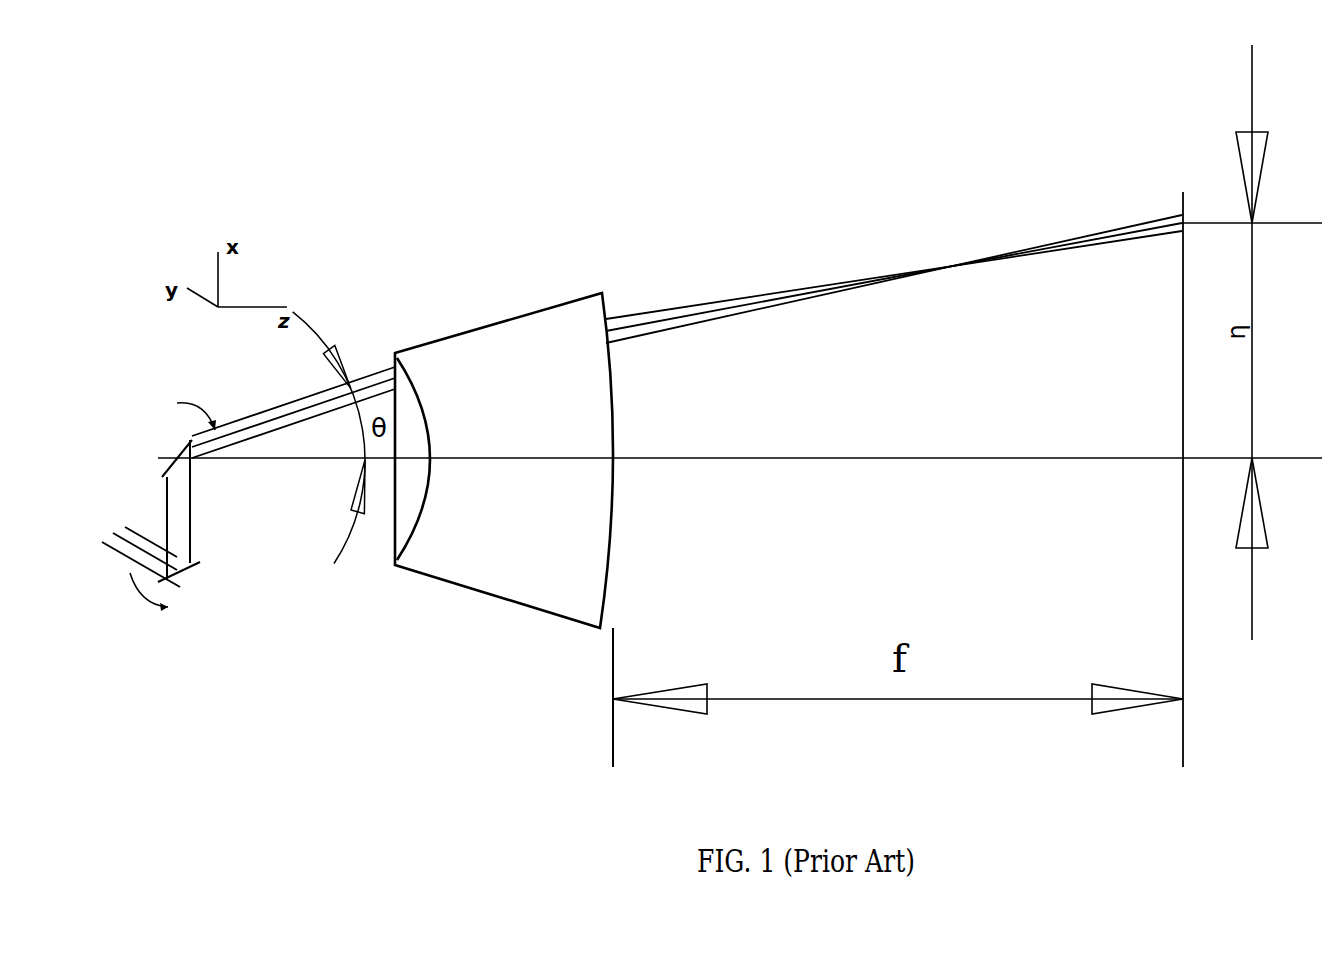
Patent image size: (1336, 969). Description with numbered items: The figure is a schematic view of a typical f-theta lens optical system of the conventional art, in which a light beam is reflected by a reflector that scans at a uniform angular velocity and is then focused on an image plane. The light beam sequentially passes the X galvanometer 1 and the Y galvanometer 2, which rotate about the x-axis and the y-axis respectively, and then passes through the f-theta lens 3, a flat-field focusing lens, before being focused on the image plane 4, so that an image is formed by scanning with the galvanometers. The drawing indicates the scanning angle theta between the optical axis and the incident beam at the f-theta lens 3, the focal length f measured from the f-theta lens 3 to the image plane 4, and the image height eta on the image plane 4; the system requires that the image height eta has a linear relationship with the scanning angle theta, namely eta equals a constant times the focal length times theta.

The X galvanometer 1 is at (160, 562).
The Y galvanometer 2 is at (178, 455).
The fθ lens 3 is at (552, 373).
The image plane 4 is at (1173, 278).